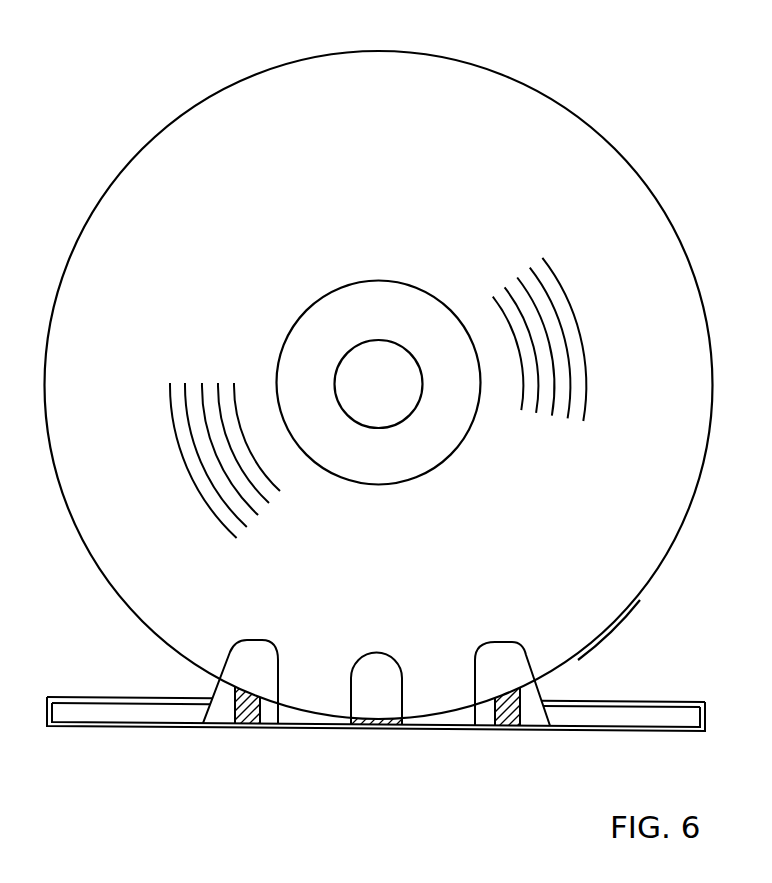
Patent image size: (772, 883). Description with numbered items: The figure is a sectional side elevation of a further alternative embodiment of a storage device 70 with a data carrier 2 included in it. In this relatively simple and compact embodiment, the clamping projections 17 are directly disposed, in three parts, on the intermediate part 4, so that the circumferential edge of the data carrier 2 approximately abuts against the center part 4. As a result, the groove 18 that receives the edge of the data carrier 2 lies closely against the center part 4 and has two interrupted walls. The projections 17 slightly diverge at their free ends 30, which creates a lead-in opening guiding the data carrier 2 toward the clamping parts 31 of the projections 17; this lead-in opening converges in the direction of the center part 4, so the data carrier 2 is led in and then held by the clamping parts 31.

The storage device 70 is at (379, 375).
The data carrier 2 is at (662, 60).
The groove 18 is at (588, 661).
The intermediate part 4 is at (645, 731).
The clamping parts 31 is at (372, 685).
The free ends 30 is at (507, 657).
The clamping projections 17 is at (527, 700).